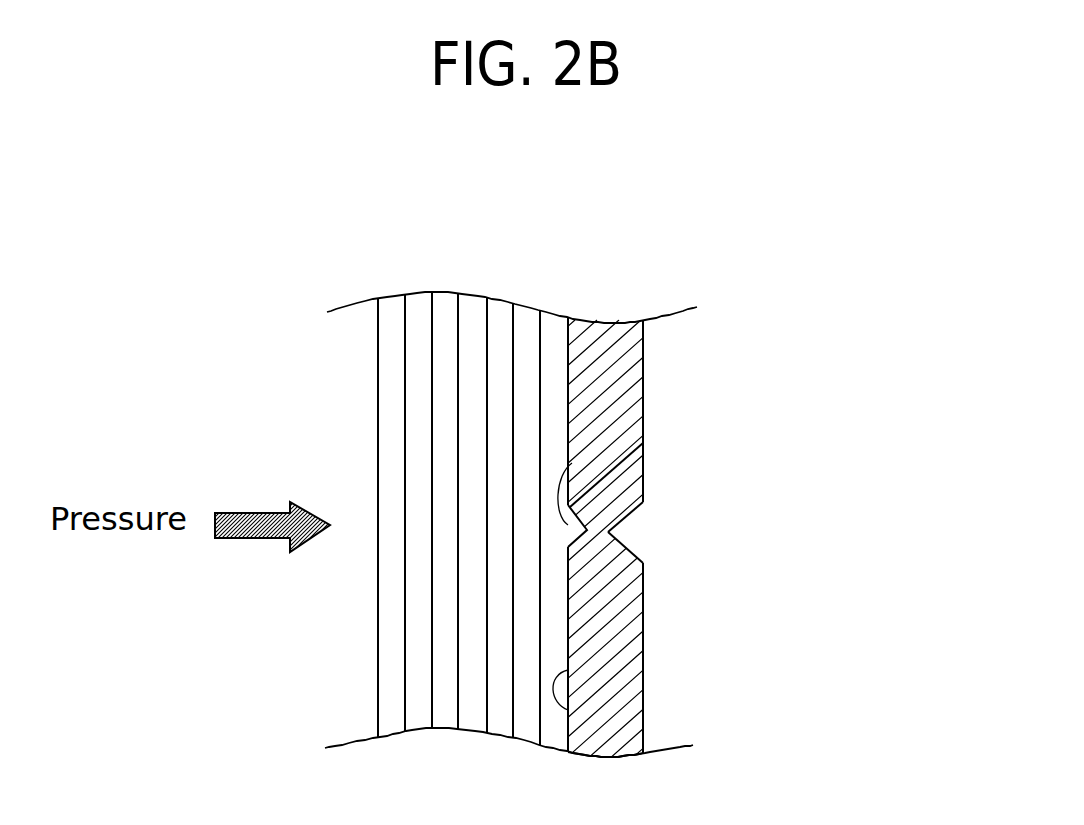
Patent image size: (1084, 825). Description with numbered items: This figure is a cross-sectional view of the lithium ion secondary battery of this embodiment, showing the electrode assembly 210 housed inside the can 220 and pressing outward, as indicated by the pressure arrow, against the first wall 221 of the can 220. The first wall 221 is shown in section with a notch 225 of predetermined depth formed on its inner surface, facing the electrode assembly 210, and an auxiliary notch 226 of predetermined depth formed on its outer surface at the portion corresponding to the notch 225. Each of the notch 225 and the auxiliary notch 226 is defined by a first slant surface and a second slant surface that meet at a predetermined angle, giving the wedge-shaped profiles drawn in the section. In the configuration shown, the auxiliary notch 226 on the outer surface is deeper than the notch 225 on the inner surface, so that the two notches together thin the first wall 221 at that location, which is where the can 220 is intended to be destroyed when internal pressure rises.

The electrode assembly 210 is at (355, 632).
The can 220 is at (663, 357).
The notch 225 is at (868, 392).
The auxiliary notch 226 is at (868, 492).
The first wall 221 is at (865, 650).